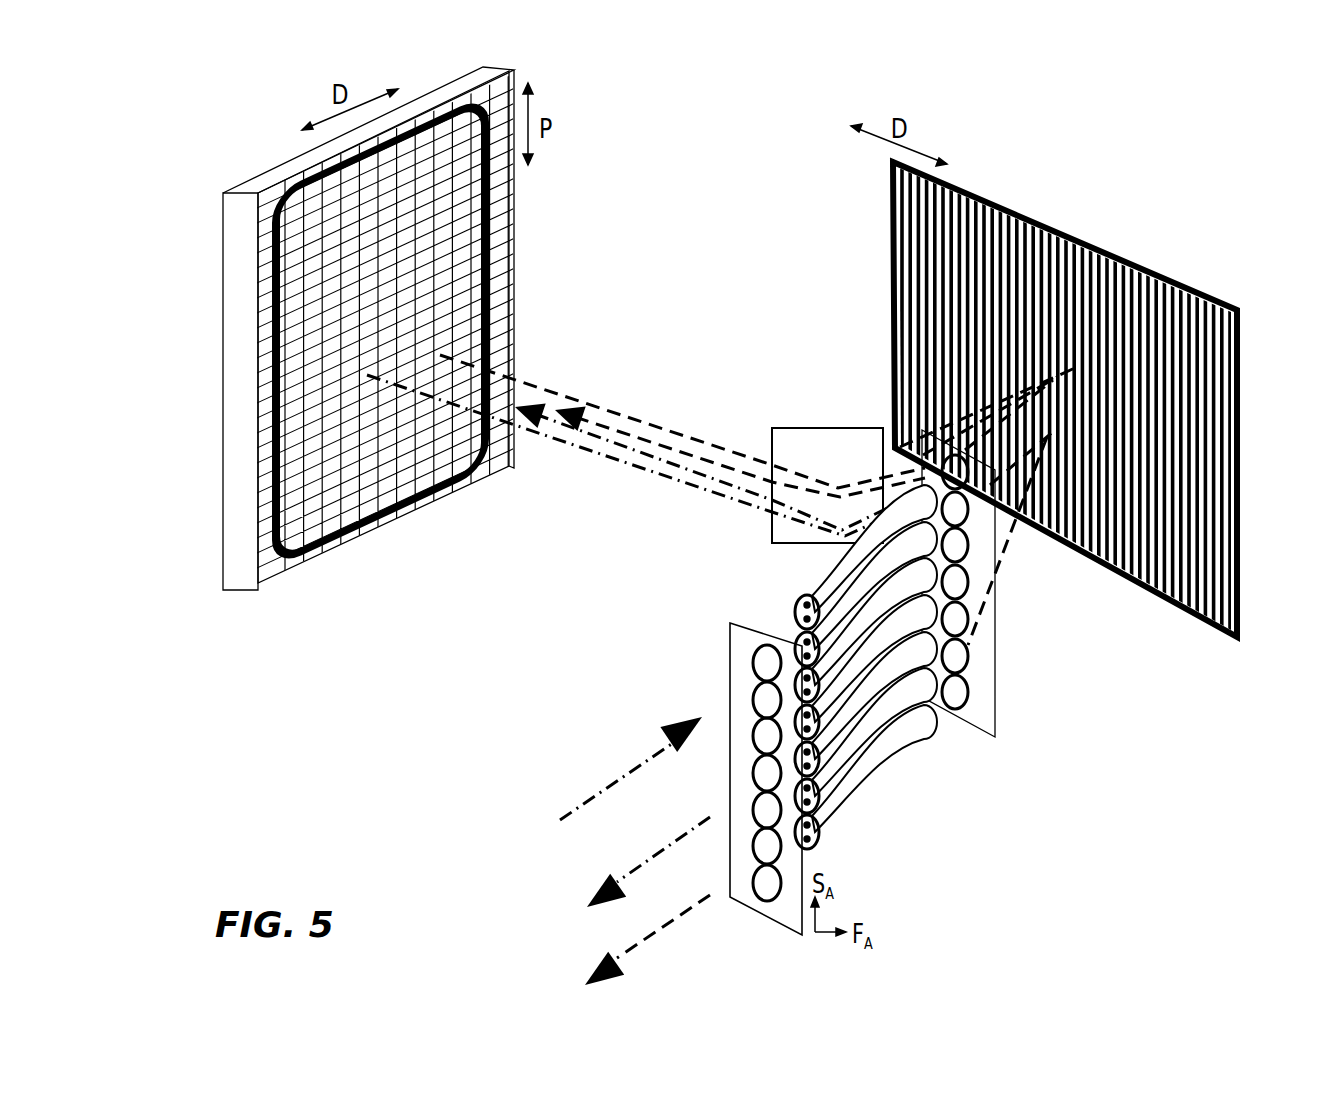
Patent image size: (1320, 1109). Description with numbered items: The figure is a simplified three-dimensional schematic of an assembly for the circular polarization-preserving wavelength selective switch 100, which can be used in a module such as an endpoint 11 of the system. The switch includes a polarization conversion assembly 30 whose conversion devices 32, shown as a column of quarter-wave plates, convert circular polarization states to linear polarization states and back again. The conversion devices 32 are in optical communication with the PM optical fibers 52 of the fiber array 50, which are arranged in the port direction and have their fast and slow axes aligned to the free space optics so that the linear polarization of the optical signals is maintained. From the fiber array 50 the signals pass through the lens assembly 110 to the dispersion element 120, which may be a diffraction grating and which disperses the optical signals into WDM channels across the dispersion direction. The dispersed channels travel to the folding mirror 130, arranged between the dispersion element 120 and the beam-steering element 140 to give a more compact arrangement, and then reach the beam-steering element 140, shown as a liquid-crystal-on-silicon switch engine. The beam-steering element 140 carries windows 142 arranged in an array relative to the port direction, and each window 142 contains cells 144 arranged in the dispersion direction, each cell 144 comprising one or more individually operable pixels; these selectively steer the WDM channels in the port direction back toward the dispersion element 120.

The endpoint 11 is at (275, 690).
The polarization conversion assembly 30 is at (738, 795).
The conversion devices 32 is at (766, 903).
The fiber array 50 is at (891, 793).
The PM optical fibers 52 is at (797, 604).
The wavelength selective switch 100 is at (1065, 377).
The lens assembly 110 is at (995, 740).
The dispersion element 120 is at (1069, 238).
The folding mirror 130 is at (787, 427).
The beam-steering element 140 is at (249, 180).
The windows 142 is at (267, 340).
The cells 144 is at (441, 462).